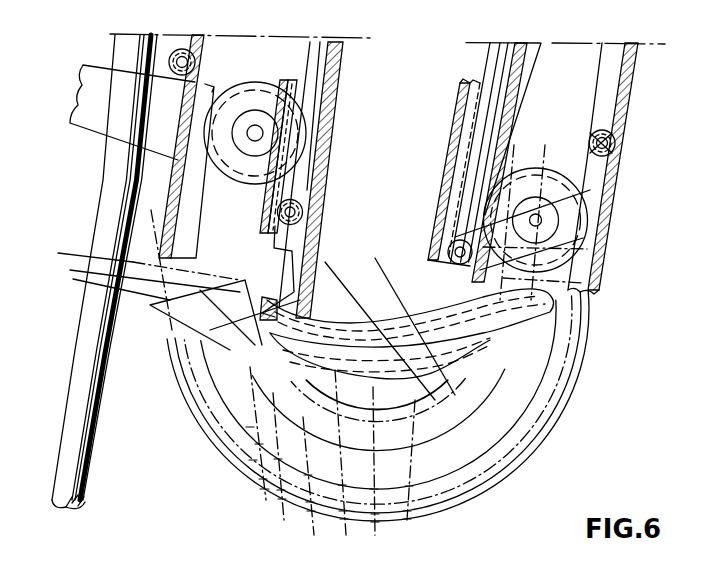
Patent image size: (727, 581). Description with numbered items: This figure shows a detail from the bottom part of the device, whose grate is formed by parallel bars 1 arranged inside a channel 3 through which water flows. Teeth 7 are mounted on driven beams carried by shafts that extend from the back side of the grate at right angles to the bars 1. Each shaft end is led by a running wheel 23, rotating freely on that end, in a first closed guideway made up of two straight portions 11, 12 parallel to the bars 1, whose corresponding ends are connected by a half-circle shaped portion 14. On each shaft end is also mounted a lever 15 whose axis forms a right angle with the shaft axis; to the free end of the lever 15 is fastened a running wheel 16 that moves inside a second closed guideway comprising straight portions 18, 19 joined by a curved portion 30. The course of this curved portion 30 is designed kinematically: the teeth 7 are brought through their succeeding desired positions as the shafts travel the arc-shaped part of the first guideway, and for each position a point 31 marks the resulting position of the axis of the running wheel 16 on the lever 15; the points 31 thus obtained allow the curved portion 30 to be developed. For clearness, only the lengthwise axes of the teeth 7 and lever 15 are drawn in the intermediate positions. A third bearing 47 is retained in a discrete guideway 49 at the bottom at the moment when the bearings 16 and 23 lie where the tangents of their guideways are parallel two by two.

The bars 1 is at (90, 320).
The channel 3 is at (55, 378).
The teeth 7 is at (103, 118).
The straight portion 11 is at (233, 245).
The straight portion 12 is at (550, 278).
The half-circle shaped portion 14 is at (499, 379).
The lever 15 is at (273, 182).
The running wheel 16 is at (302, 212).
The straight portion 18 is at (313, 100).
The straight portion 19 is at (487, 145).
The running wheel 23 is at (242, 103).
The curved portion 30 is at (403, 510).
The point 31 is at (460, 503).
The third bearing 47 is at (170, 60).
The discrete guideway 49 is at (500, 322).